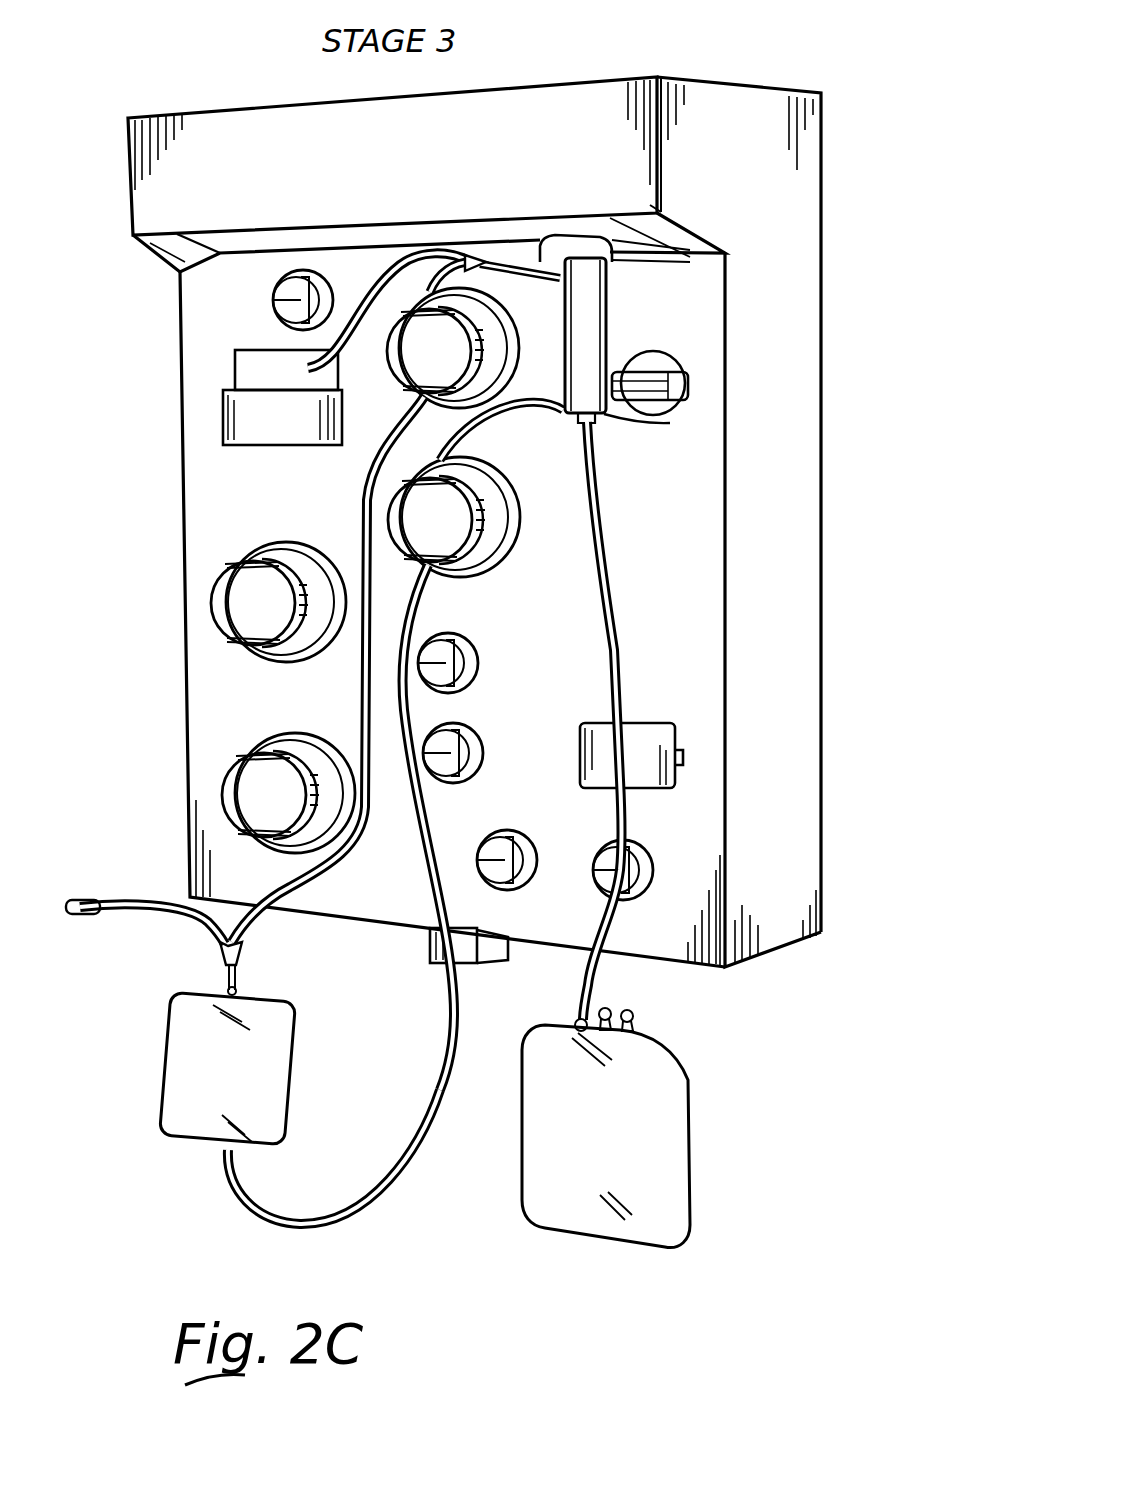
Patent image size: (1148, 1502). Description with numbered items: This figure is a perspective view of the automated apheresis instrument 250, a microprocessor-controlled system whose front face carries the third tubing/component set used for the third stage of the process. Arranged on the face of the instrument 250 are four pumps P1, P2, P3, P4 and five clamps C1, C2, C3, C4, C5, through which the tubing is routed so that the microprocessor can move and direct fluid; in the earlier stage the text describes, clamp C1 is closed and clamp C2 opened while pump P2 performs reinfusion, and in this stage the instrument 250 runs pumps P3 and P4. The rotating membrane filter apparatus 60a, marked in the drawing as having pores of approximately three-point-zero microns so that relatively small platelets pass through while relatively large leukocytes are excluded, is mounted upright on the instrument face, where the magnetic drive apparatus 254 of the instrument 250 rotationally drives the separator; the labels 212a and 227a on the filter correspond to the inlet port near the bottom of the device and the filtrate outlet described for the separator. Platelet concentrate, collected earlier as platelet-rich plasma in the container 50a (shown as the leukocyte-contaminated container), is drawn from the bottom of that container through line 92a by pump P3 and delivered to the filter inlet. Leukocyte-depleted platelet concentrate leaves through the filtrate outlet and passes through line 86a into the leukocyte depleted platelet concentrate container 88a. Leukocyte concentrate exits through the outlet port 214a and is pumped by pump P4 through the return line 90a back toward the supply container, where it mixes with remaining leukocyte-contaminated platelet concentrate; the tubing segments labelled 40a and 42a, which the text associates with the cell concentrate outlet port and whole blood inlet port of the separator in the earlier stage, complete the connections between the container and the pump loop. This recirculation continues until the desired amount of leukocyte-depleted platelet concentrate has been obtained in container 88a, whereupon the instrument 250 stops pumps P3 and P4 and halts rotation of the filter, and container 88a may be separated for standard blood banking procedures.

The automated apheresis instrument 250 is at (795, 260).
The magnetic drive apparatus 254 is at (650, 205).
The pump P1 is at (278, 602).
The pump P2 is at (288, 793).
The pump P3 is at (454, 517).
The pump P4 is at (453, 348).
The clamp C1 is at (450, 650).
The clamp C2 is at (460, 740).
The clamp C3 is at (510, 845).
The clamp C4 is at (630, 850).
The clamp C5 is at (275, 300).
The outlet port 214a is at (563, 237).
The filter (3.0 micron) 60a is at (587, 310).
The filter support bracket 227a is at (670, 423).
The filter outlet mount 212a is at (592, 426).
The cell concentrate outlet port 40a is at (290, 883).
The return line 90a is at (497, 253).
The line 92a is at (483, 427).
The whole blood inlet port 42a is at (368, 1193).
The line 86a is at (612, 595).
The PRP container 50a is at (277, 1023).
The leukocyte depleted platelet concentrate container 88a is at (685, 1073).